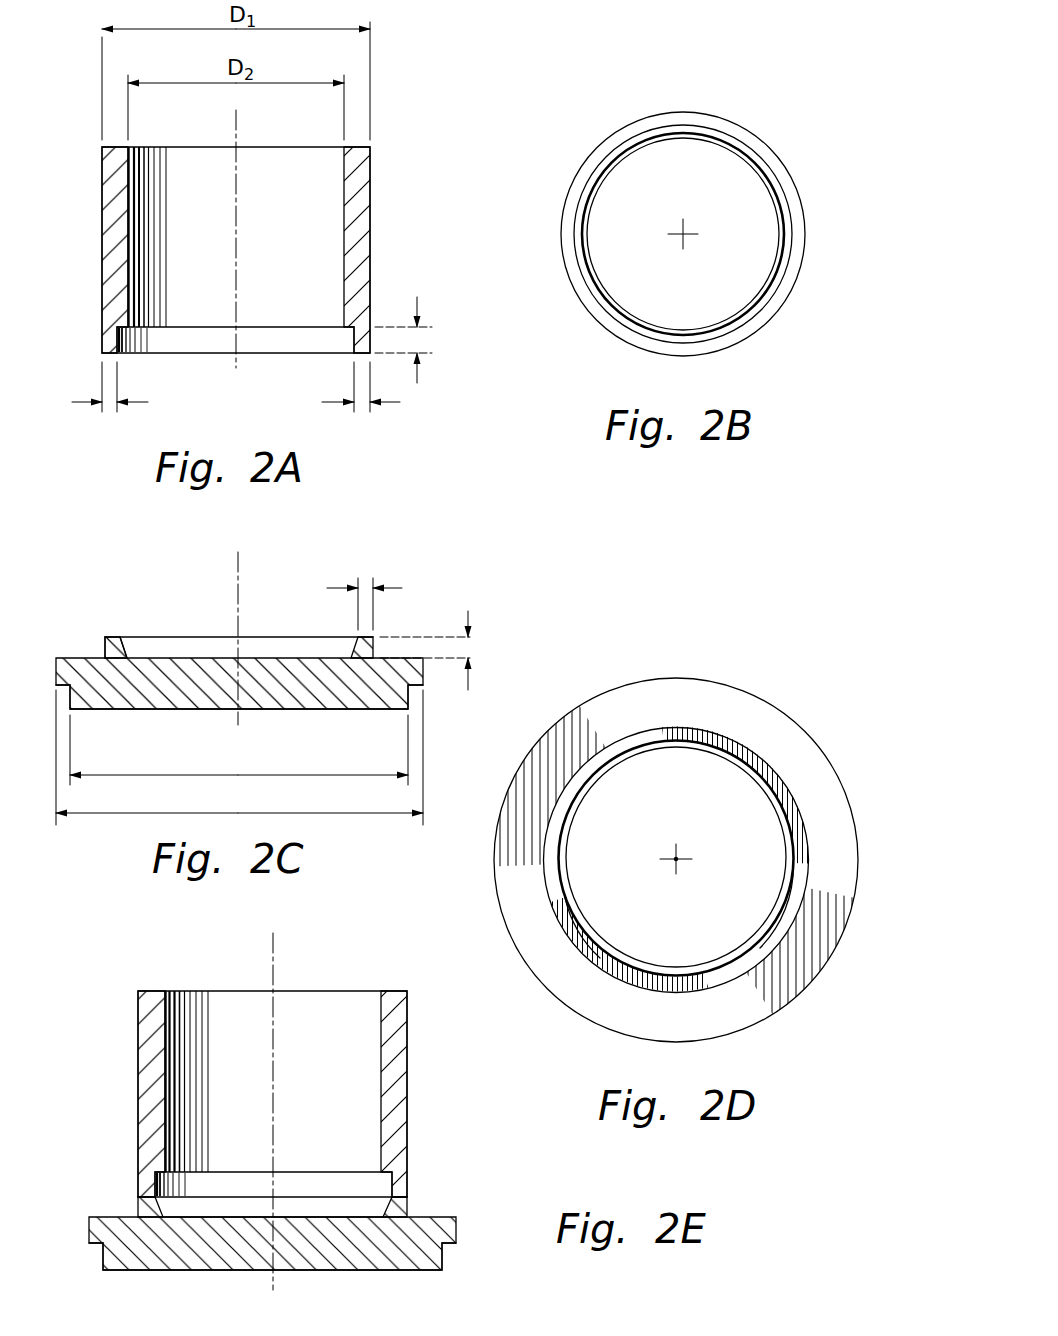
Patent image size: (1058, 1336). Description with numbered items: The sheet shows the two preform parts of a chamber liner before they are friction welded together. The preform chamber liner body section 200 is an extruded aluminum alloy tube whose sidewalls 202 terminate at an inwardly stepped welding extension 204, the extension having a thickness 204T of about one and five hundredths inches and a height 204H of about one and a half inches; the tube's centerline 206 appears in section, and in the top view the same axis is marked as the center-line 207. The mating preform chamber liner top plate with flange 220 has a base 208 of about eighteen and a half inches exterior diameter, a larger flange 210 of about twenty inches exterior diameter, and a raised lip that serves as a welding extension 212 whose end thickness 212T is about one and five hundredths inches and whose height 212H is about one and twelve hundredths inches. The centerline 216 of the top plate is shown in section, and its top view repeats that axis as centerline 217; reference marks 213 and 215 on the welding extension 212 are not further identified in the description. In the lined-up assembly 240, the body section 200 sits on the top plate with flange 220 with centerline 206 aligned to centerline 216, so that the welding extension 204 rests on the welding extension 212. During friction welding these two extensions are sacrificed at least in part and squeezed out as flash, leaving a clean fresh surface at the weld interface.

In FIG. 2A, the preform chamber liner body section 200 is at (438, 101).
In FIG. 2B, the preform chamber liner body section 200 is at (789, 111).
In FIG. 2E, the preform chamber liner body section 200 is at (409, 1076).
In FIG. 2A, the sidewalls 202 is at (372, 165).
In FIG. 2B, the sidewalls 202 is at (566, 234).
In FIG. 2E, the sidewalls 202 is at (400, 1032).
In FIG. 2A, the welding extension 204 is at (112, 341).
In FIG. 2B, the welding extension 204 is at (623, 157).
In FIG. 2E, the welding extension 204 is at (395, 1180).
In FIG. 2A, the height of welding extension 204H is at (424, 340).
In FIG. 2A, the thickness of welding extension 204T is at (110, 405).
In FIG. 2A, the centerline 206 is at (240, 120).
In FIG. 2E, the centerline 206 is at (276, 952).
In FIG. 2B, the center-line 207 is at (688, 232).
In FIG. 2C, the base 208 is at (390, 697).
In FIG. 2E, the base 208 is at (103, 1258).
In FIG. 2C, the flange 210 is at (414, 672).
In FIG. 2D, the flange 210 is at (789, 743).
In FIG. 2E, the flange 210 is at (92, 1228).
In FIG. 2C, the welding extension 212 is at (362, 646).
In FIG. 2D, the welding extension 212 is at (634, 741).
In FIG. 2E, the welding extension 212 is at (145, 1212).
In FIG. 2C, the thickness of welding extension 212T is at (362, 592).
In FIG. 2C, the height of welding extension 212H is at (476, 646).
In FIG. 2C, the inner surface of ring 213 is at (128, 655).
In FIG. 2D, the inner surface of ring 213 is at (604, 952).
In FIG. 2C, the outer surface of ring 215 is at (124, 640).
In FIG. 2D, the outer surface of ring 215 is at (737, 957).
In FIG. 2C, the centerline 216 is at (238, 562).
In FIG. 2E, the centerline 216 is at (273, 1217).
In FIG. 2D, the centerline 217 is at (676, 859).
In FIG. 2C, the preform chamber liner top plate with flange 220 is at (126, 583).
In FIG. 2D, the preform chamber liner top plate with flange 220 is at (671, 641).
In FIG. 2E, the preform chamber liner top plate with flange 220 is at (459, 1259).
In FIG. 2E, the assembly 240 is at (136, 963).